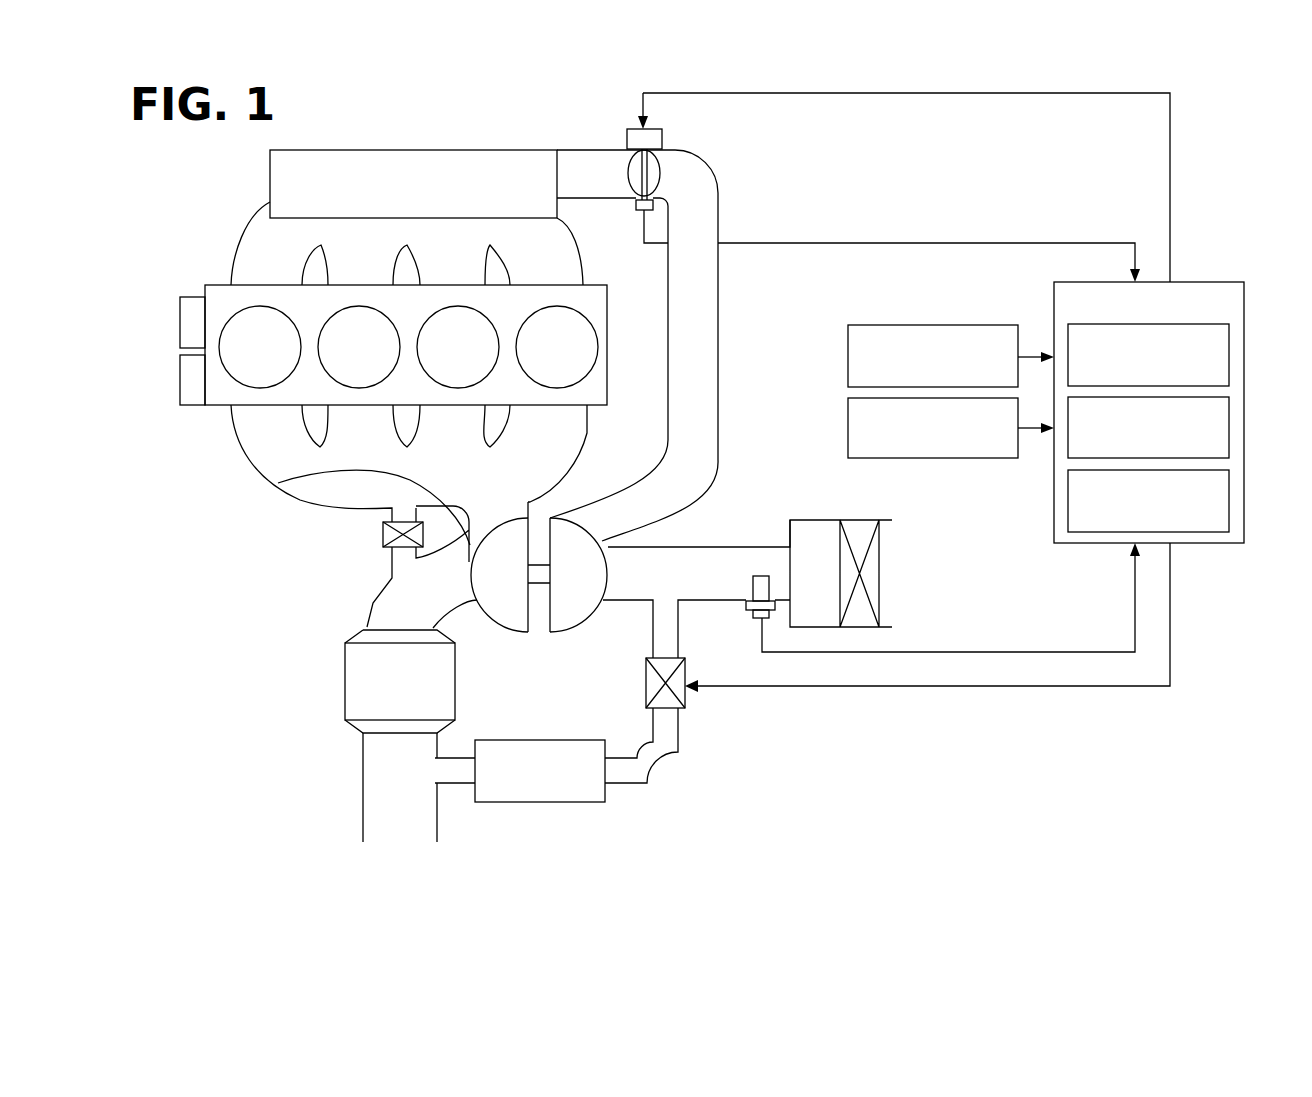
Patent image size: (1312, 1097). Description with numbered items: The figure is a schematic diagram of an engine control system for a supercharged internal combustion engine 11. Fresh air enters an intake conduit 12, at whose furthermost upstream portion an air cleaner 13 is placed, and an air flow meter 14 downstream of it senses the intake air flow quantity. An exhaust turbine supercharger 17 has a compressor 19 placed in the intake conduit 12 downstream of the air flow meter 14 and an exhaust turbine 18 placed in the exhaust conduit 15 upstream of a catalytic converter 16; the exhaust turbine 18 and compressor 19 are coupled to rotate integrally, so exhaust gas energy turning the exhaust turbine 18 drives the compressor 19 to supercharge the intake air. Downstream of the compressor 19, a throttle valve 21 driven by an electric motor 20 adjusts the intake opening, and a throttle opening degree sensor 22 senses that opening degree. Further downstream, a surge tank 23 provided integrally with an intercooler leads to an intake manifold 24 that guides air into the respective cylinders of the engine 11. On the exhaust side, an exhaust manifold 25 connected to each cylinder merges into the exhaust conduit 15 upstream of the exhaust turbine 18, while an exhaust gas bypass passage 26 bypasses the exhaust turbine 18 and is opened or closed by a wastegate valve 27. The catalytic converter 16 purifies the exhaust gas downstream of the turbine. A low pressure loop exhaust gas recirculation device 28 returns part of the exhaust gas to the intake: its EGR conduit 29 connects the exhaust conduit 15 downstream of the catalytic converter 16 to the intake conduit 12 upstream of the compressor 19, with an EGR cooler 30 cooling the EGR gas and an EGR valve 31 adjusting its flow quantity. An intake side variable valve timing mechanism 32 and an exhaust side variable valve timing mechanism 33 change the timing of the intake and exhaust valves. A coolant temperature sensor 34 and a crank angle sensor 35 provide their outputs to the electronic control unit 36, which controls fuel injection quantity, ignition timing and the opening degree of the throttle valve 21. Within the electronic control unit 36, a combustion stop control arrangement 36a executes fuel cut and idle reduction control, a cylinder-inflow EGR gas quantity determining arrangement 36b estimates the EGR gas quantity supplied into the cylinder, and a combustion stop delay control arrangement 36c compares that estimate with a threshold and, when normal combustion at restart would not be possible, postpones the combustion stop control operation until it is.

The internal combustion engine 11 is at (367, 350).
The intake conduit 12 is at (718, 297).
The air cleaner 13 is at (880, 571).
The air flow meter 14 is at (752, 589).
The exhaust conduit 15 is at (278, 483).
The catalytic converter 16 is at (345, 682).
The exhaust turbine supercharger 17 is at (545, 619).
The exhaust turbine 18 is at (500, 621).
The compressor 19 is at (583, 622).
The electric motor 20 is at (663, 142).
The throttle valve 21 is at (661, 171).
The throttle opening degree sensor 22 is at (637, 210).
The surge tank 23 is at (413, 150).
The intake manifold 24 is at (238, 240).
The exhaust manifold 25 is at (247, 455).
The exhaust gas bypass passage 26 is at (383, 523).
The wastegate valve 27 is at (383, 540).
The low pressure loop exhaust gas recirculation (LPL EGR) device 28 is at (802, 698).
The EGR conduit 29 is at (634, 784).
The EGR cooler 30 is at (541, 803).
The EGR valve 31 is at (688, 702).
The intake side variable valve timing mechanism 32 is at (180, 322).
The exhaust side variable valve timing mechanism 33 is at (180, 378).
The coolant temperature sensor 34 is at (848, 357).
The crank angle sensor 35 is at (848, 428).
The electronic control unit (ECU) 36 is at (970, 318).
The combustion stop control arrangement 36a is at (1229, 355).
The cylinder-inflow EGR gas quantity determining arrangement 36b is at (1229, 428).
The combustion stop delay control arrangement 36c is at (1229, 498).